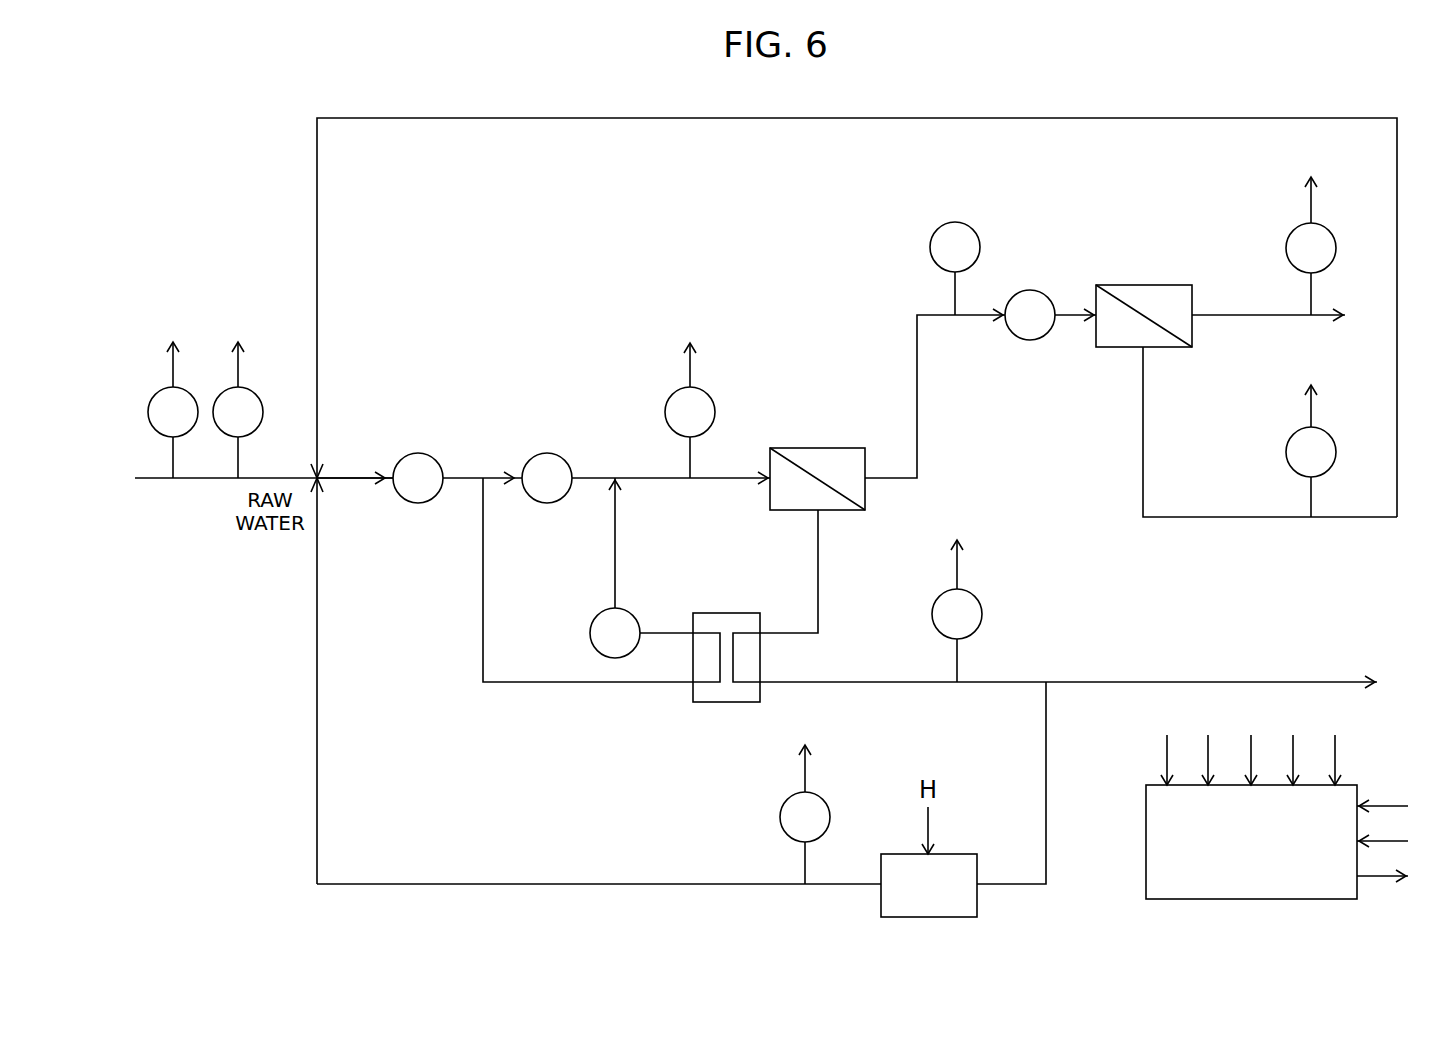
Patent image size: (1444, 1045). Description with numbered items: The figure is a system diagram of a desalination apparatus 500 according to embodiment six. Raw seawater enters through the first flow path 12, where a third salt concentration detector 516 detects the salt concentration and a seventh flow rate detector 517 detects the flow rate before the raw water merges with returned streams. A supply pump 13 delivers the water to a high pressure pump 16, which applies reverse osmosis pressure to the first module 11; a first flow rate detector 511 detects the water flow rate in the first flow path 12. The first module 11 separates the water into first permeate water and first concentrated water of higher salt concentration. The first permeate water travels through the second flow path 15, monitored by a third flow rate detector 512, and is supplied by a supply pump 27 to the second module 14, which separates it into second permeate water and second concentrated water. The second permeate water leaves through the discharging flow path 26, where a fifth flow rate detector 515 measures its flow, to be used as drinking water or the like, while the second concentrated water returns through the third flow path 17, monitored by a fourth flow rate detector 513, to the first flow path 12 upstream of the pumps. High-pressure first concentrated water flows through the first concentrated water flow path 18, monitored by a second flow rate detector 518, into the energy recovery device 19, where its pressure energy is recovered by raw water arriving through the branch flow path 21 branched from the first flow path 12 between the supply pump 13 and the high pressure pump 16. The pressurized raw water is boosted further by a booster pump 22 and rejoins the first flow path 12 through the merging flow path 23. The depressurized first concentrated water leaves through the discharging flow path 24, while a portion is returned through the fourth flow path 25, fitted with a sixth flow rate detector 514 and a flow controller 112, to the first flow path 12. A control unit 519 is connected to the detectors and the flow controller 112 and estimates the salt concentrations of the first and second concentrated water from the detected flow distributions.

The desalination apparatus 500 is at (1245, 88).
The first module 11 is at (808, 448).
The first flow path 12 is at (352, 478).
The supply pump 13 is at (418, 503).
The second module 14 is at (1136, 285).
The second flow path 15 is at (917, 404).
The high pressure pump 16 is at (547, 503).
The third flow path 17 is at (1236, 519).
The first concentrated water flow path 18 is at (818, 572).
The energy recovery device 19 is at (722, 613).
The branch flow path 21 is at (566, 682).
The booster pump 22 is at (590, 633).
The merging flow path 23 is at (615, 547).
The discharging flow path 24 is at (1185, 682).
The fourth flow path 25 is at (562, 884).
The discharging flow path 26 is at (1238, 317).
The supply pump 27 is at (1030, 340).
The flow controller 112 is at (955, 854).
The first flow rate detector 511 is at (665, 412).
The third flow rate detector 512 is at (980, 247).
The fourth flow rate detector 513 is at (1286, 452).
The sixth flow rate detector 514 is at (780, 817).
The fifth flow rate detector 515 is at (1286, 248).
The third salt concentration detector 516 is at (150, 408).
The seventh flow rate detector 517 is at (262, 408).
The second flow rate detector 518 is at (982, 614).
The control unit 519 is at (1146, 841).